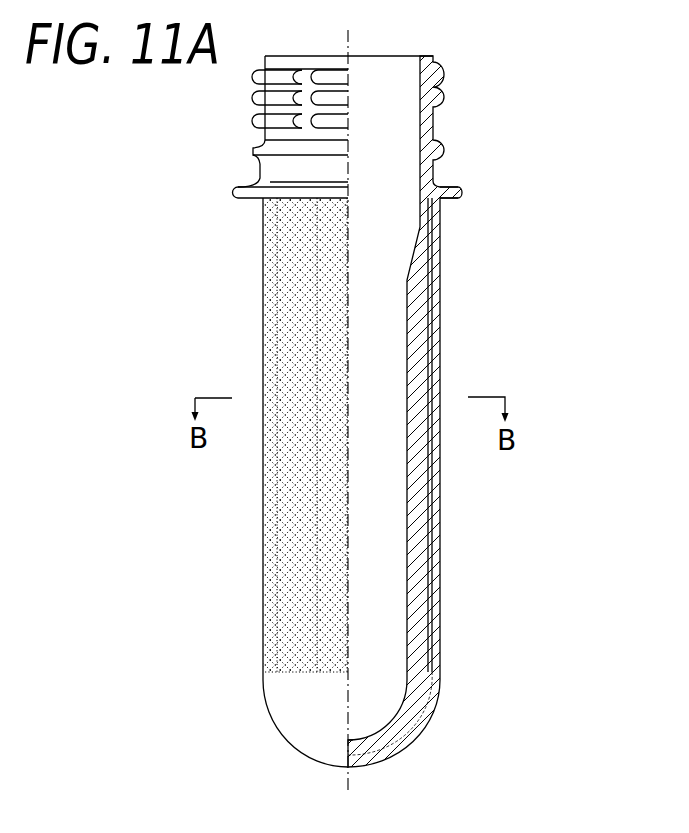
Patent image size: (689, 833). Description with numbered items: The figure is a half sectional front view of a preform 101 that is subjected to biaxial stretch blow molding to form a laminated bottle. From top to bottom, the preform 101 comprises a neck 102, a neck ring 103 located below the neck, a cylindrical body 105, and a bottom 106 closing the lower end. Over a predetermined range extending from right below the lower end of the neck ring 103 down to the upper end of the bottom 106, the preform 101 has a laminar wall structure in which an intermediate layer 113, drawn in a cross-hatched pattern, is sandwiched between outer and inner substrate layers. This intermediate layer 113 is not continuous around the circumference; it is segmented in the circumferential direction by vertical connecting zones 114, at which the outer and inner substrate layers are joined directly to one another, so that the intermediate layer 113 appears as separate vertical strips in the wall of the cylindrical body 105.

The preform 101 is at (483, 118).
The neck 102 is at (440, 59).
The neck ring 103 is at (463, 193).
The cylindrical body 105 is at (450, 582).
The bottom 106 is at (425, 734).
The intermediate layer 113 is at (320, 553).
The vertical connecting zones 114 is at (310, 509).